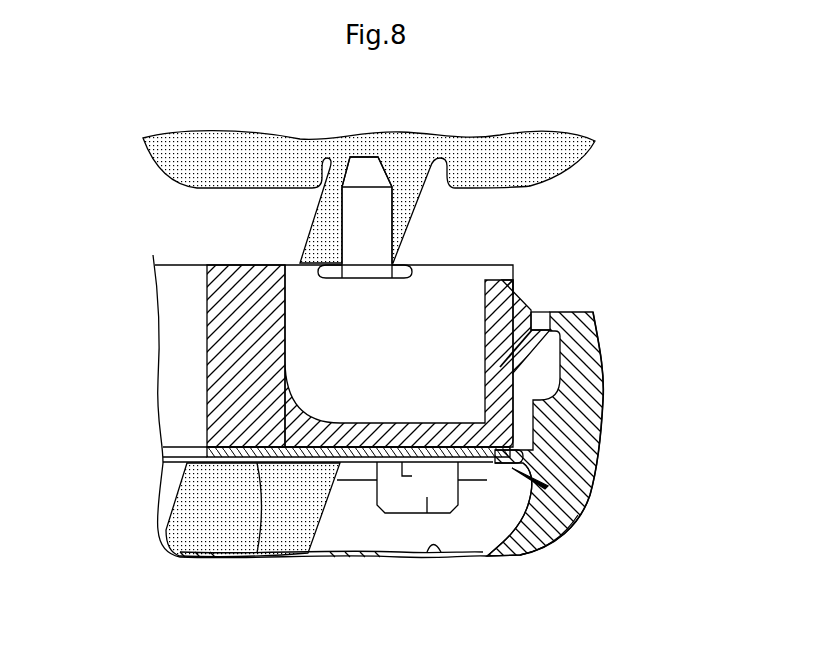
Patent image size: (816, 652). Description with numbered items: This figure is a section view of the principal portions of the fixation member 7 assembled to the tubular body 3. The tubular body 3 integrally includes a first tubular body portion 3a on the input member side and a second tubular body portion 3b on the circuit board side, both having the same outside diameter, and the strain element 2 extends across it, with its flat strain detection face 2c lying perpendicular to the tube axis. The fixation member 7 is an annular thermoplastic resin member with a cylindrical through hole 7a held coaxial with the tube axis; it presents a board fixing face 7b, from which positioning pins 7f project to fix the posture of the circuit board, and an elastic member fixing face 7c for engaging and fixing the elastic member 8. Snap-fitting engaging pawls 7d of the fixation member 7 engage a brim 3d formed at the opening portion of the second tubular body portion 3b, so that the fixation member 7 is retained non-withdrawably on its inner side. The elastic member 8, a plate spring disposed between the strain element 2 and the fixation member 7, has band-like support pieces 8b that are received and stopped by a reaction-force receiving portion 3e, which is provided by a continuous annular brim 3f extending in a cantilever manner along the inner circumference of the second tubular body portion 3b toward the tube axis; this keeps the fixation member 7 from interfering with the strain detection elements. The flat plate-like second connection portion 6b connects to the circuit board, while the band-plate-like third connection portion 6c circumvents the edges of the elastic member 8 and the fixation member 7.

The strain element 2 is at (353, 558).
The strain detection face 2c is at (440, 546).
The tubular body 3 is at (600, 465).
The first tubular body portion 3a is at (526, 546).
The second tubular body portion 3b is at (572, 312).
The brim 3d is at (540, 310).
The reaction-force receiving portion 3e is at (522, 477).
The annular brim 3f is at (536, 510).
The second connection portion 6b is at (510, 96).
The third connection portion 6c is at (195, 500).
The fixation member 7 is at (197, 264).
The through hole 7a is at (178, 325).
The board fixing face 7b is at (250, 263).
The elastic member fixing face 7c is at (257, 555).
The engaging pawls 7d is at (535, 352).
The positioning pins 7f is at (368, 160).
The elastic member 8 is at (181, 447).
The support pieces 8b is at (513, 452).